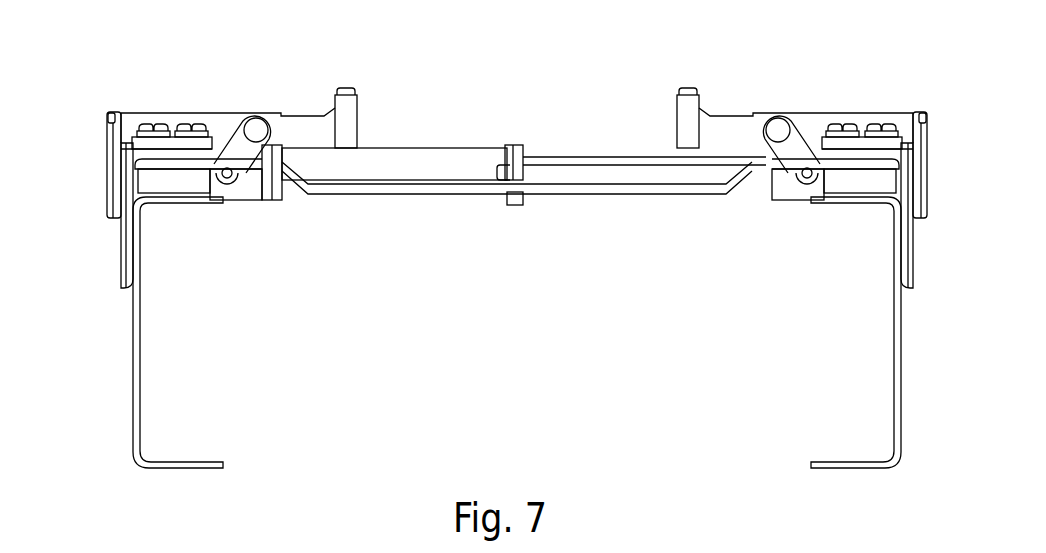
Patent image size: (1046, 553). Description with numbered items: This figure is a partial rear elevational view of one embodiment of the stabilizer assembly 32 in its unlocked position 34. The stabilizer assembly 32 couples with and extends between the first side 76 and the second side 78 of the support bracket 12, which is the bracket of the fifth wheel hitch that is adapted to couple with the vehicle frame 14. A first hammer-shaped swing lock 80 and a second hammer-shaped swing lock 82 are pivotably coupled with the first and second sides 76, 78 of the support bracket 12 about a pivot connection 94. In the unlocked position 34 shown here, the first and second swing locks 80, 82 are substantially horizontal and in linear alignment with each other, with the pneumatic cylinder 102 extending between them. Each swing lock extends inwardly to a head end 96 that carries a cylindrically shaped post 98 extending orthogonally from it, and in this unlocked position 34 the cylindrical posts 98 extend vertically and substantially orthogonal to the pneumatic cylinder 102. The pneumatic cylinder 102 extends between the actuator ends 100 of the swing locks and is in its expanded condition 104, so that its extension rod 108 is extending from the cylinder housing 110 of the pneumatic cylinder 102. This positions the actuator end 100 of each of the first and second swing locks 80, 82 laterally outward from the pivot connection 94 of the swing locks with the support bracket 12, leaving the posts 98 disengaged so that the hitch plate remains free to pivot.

The support bracket 12 is at (122, 247).
The vehicle frame 14 is at (138, 368).
The stabilizer assembly 32 is at (517, 286).
The unlocked position 34 is at (517, 151).
The first side 76 is at (872, 157).
The second side 78 is at (172, 155).
The first hammer-shaped swing lock 80 is at (734, 128).
The second hammer-shaped swing lock 82 is at (294, 127).
The pivot connection 94 is at (256, 131).
The head end 96 is at (358, 108).
The cylindrically shaped post 98 is at (345, 90).
The actuator end 100 is at (229, 177).
The pneumatic cylinder 102 is at (483, 180).
The expanded condition 104 is at (614, 179).
The extension rod 108 is at (613, 172).
The cylinder housing 110 is at (385, 172).